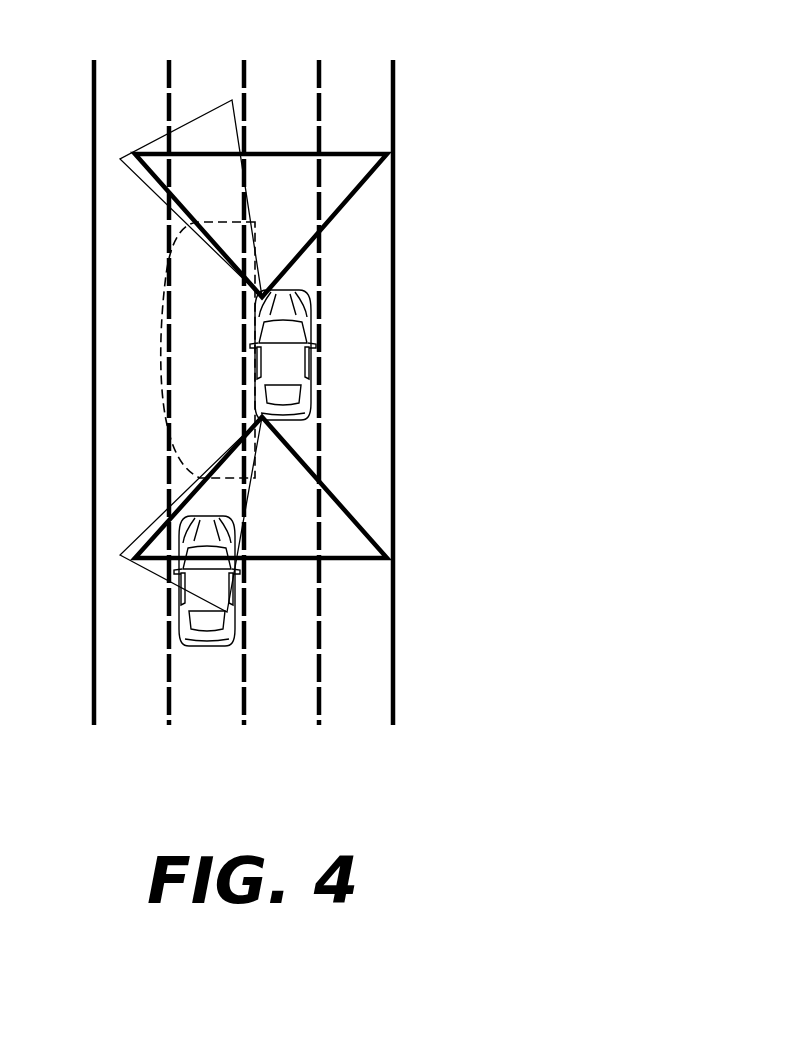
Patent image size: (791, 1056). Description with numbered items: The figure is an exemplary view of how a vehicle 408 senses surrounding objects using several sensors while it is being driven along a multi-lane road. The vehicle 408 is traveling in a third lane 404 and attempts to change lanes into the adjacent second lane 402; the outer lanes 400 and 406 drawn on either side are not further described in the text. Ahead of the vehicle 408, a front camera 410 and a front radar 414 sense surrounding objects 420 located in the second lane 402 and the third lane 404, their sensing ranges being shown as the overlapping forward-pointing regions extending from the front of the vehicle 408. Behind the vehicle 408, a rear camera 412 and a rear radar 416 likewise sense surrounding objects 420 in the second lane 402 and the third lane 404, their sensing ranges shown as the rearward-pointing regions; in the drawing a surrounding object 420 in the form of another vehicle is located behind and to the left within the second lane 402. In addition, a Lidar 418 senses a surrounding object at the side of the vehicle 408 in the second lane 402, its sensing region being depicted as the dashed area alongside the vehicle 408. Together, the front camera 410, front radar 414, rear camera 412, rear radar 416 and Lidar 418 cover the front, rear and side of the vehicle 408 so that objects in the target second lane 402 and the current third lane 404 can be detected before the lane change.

The roadway 400 is at (130, 68).
The second lane 402 is at (205, 68).
The third lane 404 is at (282, 68).
The lane 406 is at (358, 68).
The vehicle 408 is at (311, 368).
The front camera 410 is at (372, 173).
The rear camera 412 is at (372, 536).
The front radar 414 is at (132, 172).
The rear radar 416 is at (132, 555).
The Lidar 418 is at (160, 345).
The surrounding objects 420 is at (208, 647).